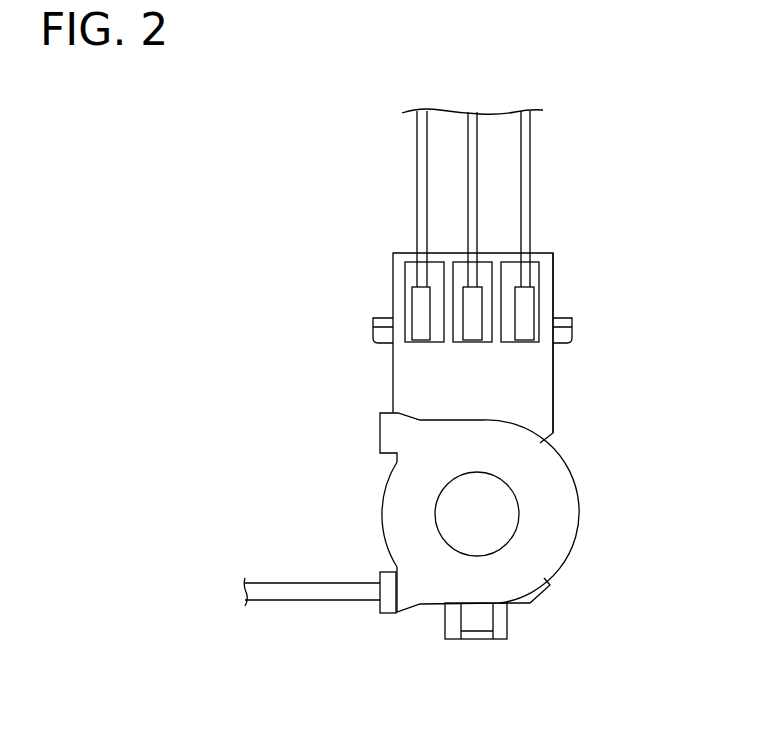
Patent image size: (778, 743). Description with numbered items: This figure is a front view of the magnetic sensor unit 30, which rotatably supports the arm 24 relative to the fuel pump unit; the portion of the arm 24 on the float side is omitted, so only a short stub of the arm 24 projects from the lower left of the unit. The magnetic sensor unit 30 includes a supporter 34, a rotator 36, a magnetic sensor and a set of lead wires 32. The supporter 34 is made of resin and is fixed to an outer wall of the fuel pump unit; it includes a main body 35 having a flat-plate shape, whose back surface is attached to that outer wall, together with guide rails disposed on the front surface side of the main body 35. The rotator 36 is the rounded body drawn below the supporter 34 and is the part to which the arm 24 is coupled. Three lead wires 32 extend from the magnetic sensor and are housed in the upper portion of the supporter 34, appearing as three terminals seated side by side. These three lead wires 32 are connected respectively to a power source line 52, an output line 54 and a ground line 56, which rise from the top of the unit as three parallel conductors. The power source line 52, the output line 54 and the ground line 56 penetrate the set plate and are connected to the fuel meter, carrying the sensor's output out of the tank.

The arm 24 is at (292, 592).
The magnetic sensor unit 30 is at (503, 243).
The lead wire 32 is at (427, 285).
The supporter 34 is at (516, 312).
The main body 35 is at (537, 415).
The rotator 36 is at (513, 446).
The power source line 52 is at (417, 133).
The output line 54 is at (473, 115).
The ground line 56 is at (531, 167).